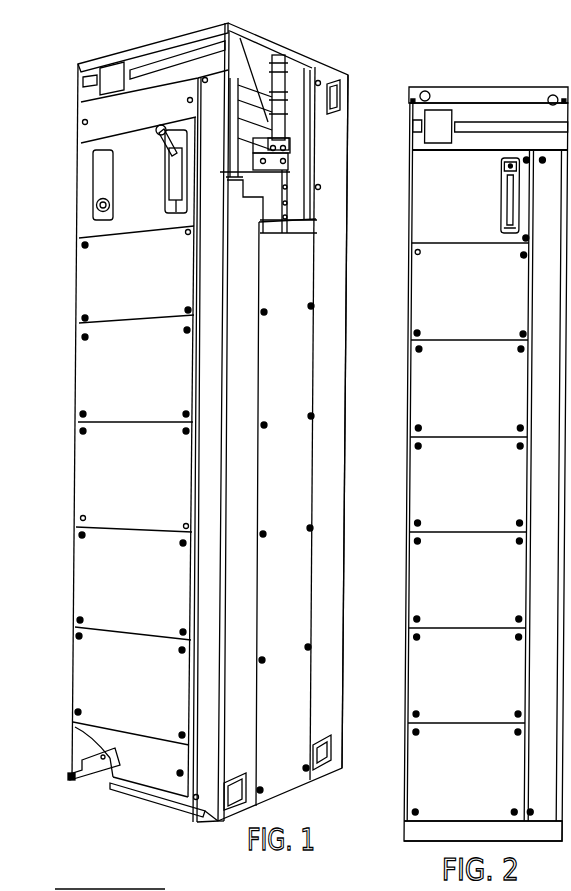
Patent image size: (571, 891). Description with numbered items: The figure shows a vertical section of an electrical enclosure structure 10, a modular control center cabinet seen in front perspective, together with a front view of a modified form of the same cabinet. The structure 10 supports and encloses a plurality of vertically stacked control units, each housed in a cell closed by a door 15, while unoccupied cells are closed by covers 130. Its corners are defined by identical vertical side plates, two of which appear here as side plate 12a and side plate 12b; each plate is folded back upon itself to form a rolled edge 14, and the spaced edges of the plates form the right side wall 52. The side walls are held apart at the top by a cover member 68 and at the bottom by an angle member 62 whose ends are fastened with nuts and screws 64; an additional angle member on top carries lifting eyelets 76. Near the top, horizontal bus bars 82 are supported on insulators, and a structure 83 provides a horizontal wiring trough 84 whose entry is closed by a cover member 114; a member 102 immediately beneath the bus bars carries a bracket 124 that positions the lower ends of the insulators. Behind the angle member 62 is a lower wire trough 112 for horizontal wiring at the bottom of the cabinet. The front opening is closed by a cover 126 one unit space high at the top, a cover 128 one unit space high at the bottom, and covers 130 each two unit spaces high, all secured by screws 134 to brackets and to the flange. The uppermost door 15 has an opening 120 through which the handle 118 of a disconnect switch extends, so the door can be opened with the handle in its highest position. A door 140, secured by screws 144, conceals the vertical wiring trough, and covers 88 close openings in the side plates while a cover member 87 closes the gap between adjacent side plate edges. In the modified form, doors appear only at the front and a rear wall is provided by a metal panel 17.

In FIG. 1, the electrical enclosure structure 10 is at (62, 353).
In FIG. 2, the electrical enclosure structure 10 is at (392, 365).
In FIG. 1, the side plate 12a is at (238, 716).
In FIG. 1, the side plate 12b is at (333, 702).
In FIG. 1, the rolled edge 14 is at (74, 481).
In FIG. 2, the rolled edge 14 is at (485, 485).
In FIG. 1, the door 15 is at (80, 184).
In FIG. 2, the door 15 is at (472, 202).
In FIG. 1, the metal panel 17 is at (121, 883).
In FIG. 1, the right side wall 52 is at (292, 391).
In FIG. 1, the angle member 62 is at (137, 796).
In FIG. 2, the angle member 62 is at (431, 832).
In FIG. 1, the nuts and screws 64 is at (69, 779).
In FIG. 1, the cover member 68 is at (141, 58).
In FIG. 2, the cover member 68 is at (490, 126).
In FIG. 2, the lifting eyelets 76 is at (428, 91).
In FIG. 1, the horizontal bus bars 82 is at (285, 57).
In FIG. 1, the structure 83 is at (258, 68).
In FIG. 1, the horizontal wiring trough 84 is at (243, 34).
In FIG. 1, the cover member 87 is at (294, 586).
In FIG. 1, the cover 88 is at (238, 778).
In FIG. 1, the member 102 is at (236, 180).
In FIG. 1, the lower wire trough 112 is at (107, 778).
In FIG. 1, the cover member 114 is at (198, 71).
In FIG. 1, the handle 118 is at (158, 136).
In FIG. 1, the opening 120 is at (171, 207).
In FIG. 1, the bracket 124 is at (291, 143).
In FIG. 1, the cover 126 is at (166, 112).
In FIG. 1, the cover 128 is at (133, 773).
In FIG. 1, the covers 130 is at (138, 286).
In FIG. 2, the covers 130 is at (503, 294).
In FIG. 1, the screws 134 is at (82, 121).
In FIG. 2, the screws 134 is at (524, 256).
In FIG. 1, the door 140 is at (212, 796).
In FIG. 1, the screws 144 is at (206, 83).